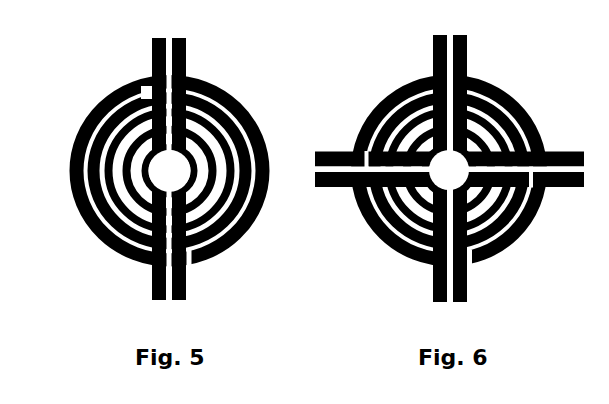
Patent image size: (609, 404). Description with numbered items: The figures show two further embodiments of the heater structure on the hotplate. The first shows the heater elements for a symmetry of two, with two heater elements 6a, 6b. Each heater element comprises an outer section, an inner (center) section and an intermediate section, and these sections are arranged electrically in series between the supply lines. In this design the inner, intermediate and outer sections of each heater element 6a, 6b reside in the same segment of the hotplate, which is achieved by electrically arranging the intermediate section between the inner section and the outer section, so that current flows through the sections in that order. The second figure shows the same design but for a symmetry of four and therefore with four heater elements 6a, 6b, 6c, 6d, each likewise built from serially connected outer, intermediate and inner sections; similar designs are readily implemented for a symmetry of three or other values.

In FIG. 5, the heater element 6a is at (232, 169).
In FIG. 6, the heater element 6a is at (512, 168).
In FIG. 5, the heater element 6b is at (98, 169).
In FIG. 6, the heater element 6b is at (382, 116).
In FIG. 6, the heater element 6c is at (394, 174).
In FIG. 6, the heater element 6d is at (516, 223).